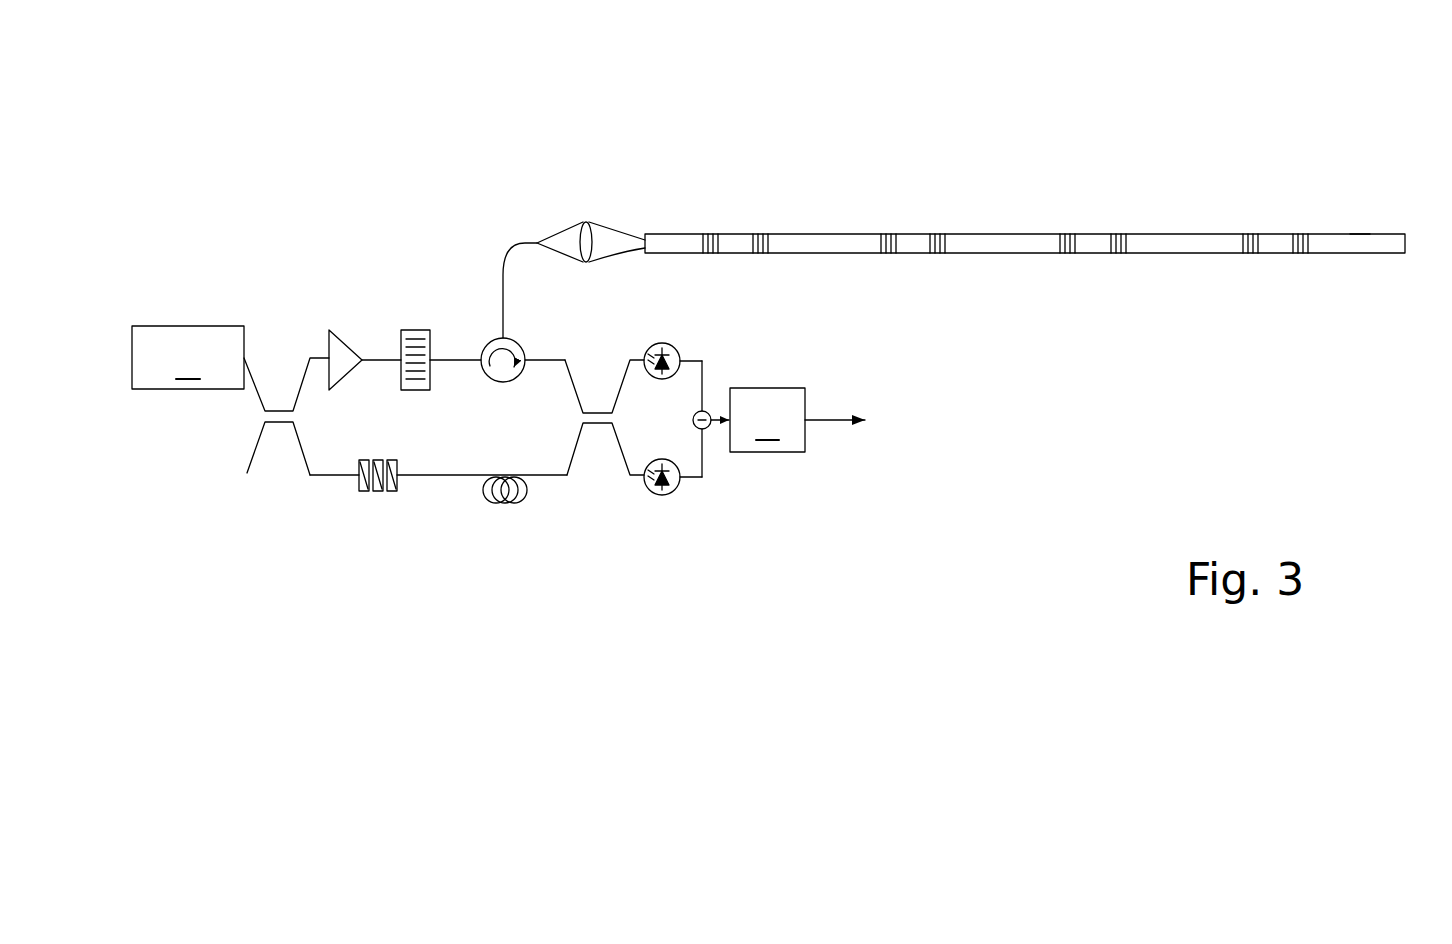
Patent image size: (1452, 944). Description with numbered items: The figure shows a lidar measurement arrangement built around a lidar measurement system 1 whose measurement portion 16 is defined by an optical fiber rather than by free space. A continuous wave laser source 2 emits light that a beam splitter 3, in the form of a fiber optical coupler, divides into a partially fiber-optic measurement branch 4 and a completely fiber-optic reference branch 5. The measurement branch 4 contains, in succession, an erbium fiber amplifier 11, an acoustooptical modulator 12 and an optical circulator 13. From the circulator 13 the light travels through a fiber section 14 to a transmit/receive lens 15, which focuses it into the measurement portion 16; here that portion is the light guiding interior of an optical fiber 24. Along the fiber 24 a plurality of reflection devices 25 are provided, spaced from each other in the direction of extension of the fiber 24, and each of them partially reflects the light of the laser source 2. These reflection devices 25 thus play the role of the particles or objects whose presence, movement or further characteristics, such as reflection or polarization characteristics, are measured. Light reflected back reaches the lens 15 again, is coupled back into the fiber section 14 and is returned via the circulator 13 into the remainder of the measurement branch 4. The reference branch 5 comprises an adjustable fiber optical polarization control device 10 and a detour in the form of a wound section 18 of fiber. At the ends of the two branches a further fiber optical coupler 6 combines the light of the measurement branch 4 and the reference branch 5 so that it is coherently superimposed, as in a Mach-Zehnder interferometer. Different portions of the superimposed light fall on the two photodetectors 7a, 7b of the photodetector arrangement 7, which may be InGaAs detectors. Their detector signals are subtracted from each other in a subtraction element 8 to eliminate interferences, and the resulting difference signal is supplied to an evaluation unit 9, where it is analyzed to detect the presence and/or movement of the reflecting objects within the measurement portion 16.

The lidar measurement system 1 is at (236, 172).
The continuous wave laser source 2 is at (188, 357).
The beam splitter 3 is at (278, 460).
The measurement branch 4 is at (388, 290).
The reference branch 5 is at (432, 525).
The fiber optical coupler 6 is at (598, 457).
The photodetector arrangement 7 is at (693, 444).
The photodetector 7a is at (672, 347).
The photodetector 7b is at (675, 490).
The subtraction element 8 is at (707, 413).
The evaluation unit 9 is at (797, 420).
The polarization control device 10 is at (380, 488).
The erbium fiber amplifier 11 is at (335, 330).
The acoustooptical modulator 12 is at (422, 330).
The optical circulator 13 is at (498, 376).
The fiber section 14 is at (506, 283).
The transmit/receive lens 15 is at (590, 236).
The measurement portion 16 is at (1037, 206).
The wound section 18 is at (502, 504).
The optical fiber 24 is at (1350, 234).
The reflection devices 25 is at (888, 254).